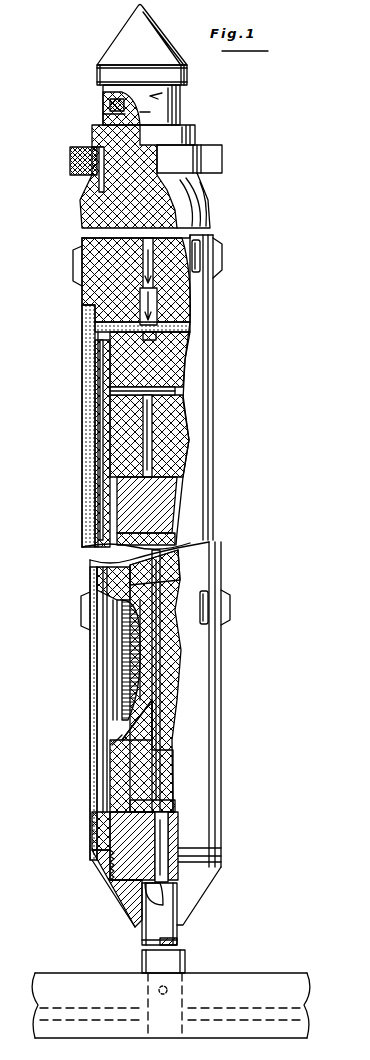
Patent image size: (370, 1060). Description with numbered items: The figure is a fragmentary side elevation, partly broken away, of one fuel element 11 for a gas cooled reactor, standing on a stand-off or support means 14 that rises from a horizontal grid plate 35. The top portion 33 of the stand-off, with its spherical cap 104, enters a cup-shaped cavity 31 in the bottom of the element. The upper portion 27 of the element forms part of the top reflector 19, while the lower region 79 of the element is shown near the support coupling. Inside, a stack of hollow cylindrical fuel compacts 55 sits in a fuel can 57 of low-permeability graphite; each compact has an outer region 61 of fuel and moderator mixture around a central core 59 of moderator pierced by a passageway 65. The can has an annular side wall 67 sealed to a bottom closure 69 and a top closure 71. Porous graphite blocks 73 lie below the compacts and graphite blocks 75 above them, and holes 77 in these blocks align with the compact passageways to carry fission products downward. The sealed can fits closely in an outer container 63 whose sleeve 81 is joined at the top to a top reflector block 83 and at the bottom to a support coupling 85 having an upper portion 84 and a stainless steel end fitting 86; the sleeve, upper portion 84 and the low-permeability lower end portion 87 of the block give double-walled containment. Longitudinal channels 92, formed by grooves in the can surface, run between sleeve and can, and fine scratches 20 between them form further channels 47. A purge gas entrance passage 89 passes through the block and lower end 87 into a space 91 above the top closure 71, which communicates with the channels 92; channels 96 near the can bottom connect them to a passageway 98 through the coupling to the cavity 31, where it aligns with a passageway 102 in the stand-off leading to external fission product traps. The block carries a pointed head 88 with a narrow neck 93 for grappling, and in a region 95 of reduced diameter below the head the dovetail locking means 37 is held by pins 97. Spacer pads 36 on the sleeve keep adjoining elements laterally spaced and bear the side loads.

The fuel element 11 is at (195, 395).
The fuel element support means 14 is at (185, 955).
The top reflector 19 is at (150, 96).
The scratches 20 is at (118, 656).
The upper portion 27 is at (208, 283).
The cavity 31 is at (118, 901).
The top portion 33 is at (148, 915).
The grid plate 35 is at (225, 978).
The spacing means 36 is at (73, 253).
The dovetail locking means 37 is at (218, 158).
The channels 47 is at (120, 678).
The fuel compacts 55 is at (160, 503).
The fuel can 57 is at (100, 448).
The central core 59 is at (125, 560).
The outer region 61 is at (102, 528).
The outer container 63 is at (200, 352).
The passageway 65 is at (158, 590).
The annular side wall 67 is at (100, 490).
The bottom closure 69 is at (118, 790).
The top closure 71 is at (96, 356).
The blocks 73 is at (110, 740).
The blocks 75 is at (165, 420).
The holes 77 is at (150, 452).
The lower tube 79 is at (205, 785).
The sleeve 81 is at (95, 665).
The top reflector block 83 is at (100, 200).
The upper portion 84 is at (130, 822).
The support coupling 85 is at (132, 841).
The end fitting 86 is at (90, 888).
The lower end portion 87 is at (100, 320).
The pointed head 88 is at (118, 52).
The purge gas entrance passage 89 is at (130, 268).
The space 91 is at (165, 330).
The channels 92 is at (92, 412).
The neck 93 is at (178, 108).
The region of reduced diameter 95 is at (196, 135).
The channels 96 is at (160, 815).
The pins 97 is at (85, 150).
The passageway 98 is at (162, 840).
The passageway 102 is at (185, 942).
The spherical cap 104 is at (160, 895).